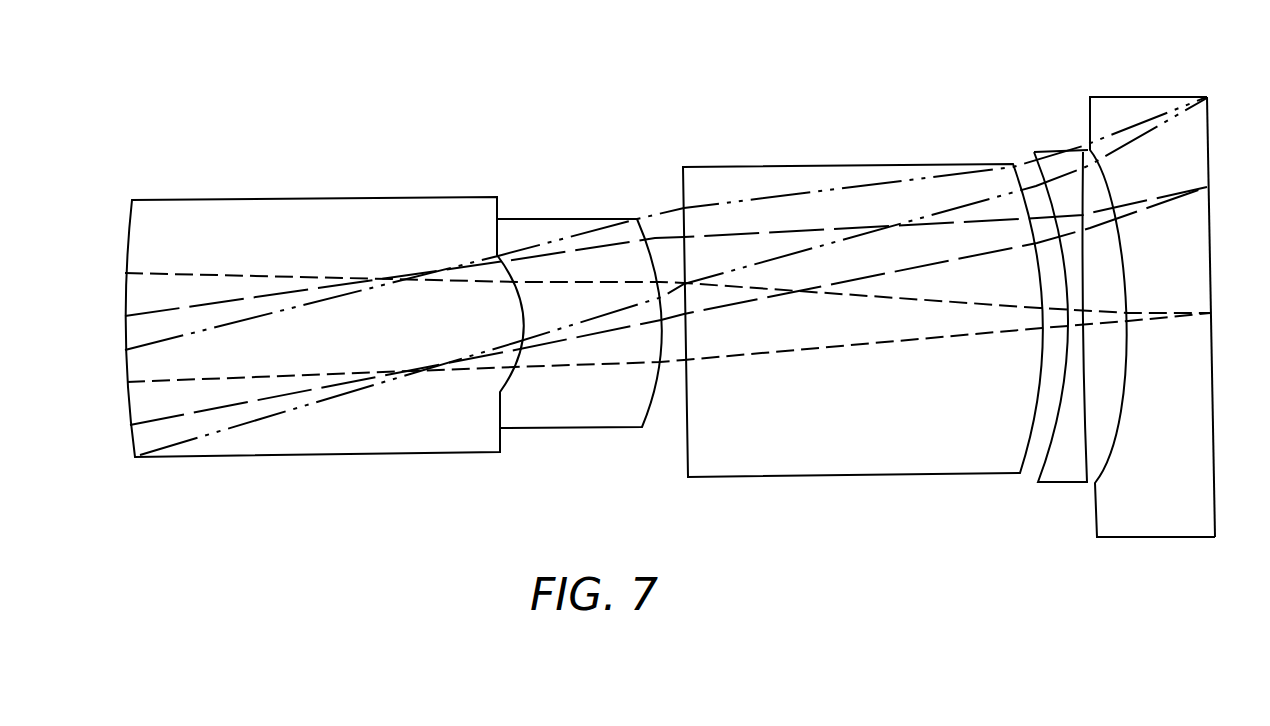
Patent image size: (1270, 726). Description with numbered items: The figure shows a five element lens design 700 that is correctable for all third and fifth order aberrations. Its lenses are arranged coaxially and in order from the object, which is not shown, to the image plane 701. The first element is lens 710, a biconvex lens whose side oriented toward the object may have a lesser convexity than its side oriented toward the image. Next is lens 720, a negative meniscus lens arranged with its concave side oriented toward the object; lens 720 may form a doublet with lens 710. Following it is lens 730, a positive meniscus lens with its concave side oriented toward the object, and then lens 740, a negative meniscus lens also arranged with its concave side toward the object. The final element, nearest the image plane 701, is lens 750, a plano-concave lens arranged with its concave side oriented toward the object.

The five element lens design 700 is at (367, 154).
The image plane 701 is at (1208, 97).
The lens 710 is at (296, 198).
The lens 720 is at (560, 219).
The lens 730 is at (827, 165).
The lens 740 is at (1052, 151).
The lens 750 is at (1128, 97).